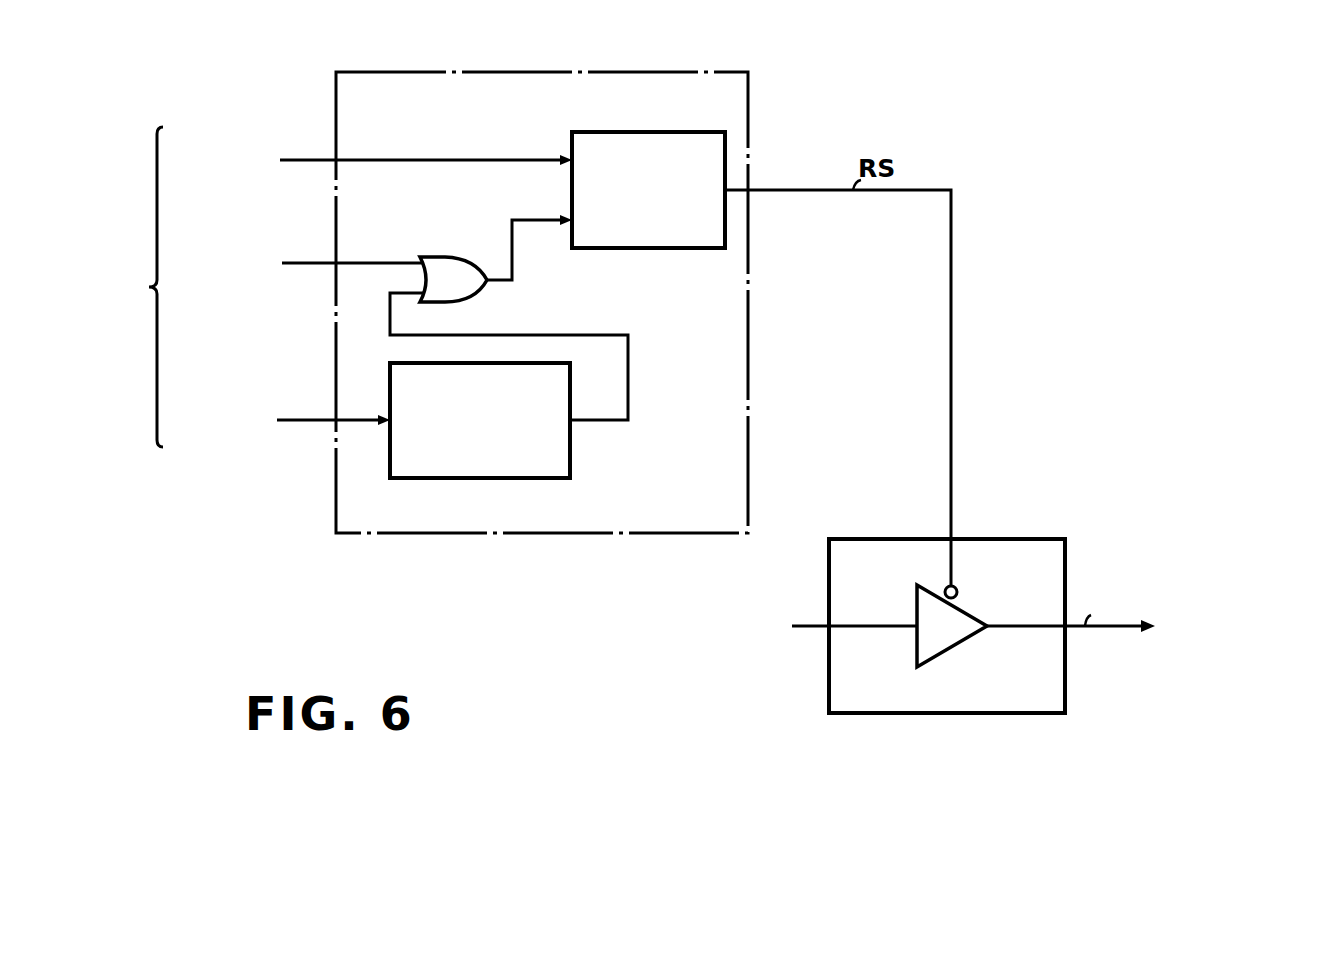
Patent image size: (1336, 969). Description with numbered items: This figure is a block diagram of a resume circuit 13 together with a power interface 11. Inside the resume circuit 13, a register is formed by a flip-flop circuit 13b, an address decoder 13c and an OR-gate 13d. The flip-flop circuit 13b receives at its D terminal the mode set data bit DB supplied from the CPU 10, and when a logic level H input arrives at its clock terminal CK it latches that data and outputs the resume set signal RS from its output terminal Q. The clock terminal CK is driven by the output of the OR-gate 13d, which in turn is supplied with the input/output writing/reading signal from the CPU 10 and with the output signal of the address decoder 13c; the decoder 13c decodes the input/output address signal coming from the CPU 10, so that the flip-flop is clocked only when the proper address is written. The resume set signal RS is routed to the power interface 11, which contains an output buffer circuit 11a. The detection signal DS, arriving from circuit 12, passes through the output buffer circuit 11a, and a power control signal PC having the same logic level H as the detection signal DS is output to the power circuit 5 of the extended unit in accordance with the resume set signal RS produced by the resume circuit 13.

The resume circuit 13 is at (578, 71).
The flip-flop circuit 13b is at (657, 132).
The address decoder 13c is at (505, 478).
The OR-gate 13d is at (446, 257).
The power interface 11 is at (1010, 539).
The output buffer circuit 11a is at (958, 650).
The CPU 10 is at (152, 287).
The circuit 12 is at (739, 627).
The power circuit 5 is at (1155, 626).